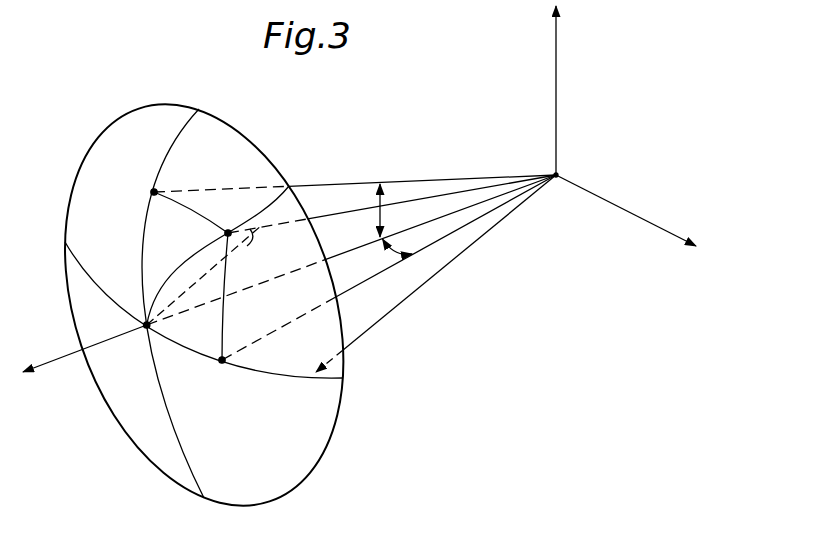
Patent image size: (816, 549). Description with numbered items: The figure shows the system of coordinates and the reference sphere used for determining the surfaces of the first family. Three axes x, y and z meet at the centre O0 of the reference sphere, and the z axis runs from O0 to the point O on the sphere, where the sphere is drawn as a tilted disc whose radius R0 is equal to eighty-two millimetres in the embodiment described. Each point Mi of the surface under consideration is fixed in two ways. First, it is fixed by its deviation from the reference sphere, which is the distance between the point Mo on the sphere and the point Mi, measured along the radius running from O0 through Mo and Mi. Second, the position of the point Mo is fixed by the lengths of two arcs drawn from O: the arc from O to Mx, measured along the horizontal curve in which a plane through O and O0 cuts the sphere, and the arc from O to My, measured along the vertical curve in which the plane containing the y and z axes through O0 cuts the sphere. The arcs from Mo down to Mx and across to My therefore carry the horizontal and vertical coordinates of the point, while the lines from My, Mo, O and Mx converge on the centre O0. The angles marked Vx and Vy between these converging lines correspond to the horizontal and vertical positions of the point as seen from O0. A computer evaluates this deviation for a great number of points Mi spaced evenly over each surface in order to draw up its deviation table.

The centre of the reference sphere O0 is at (429, 235).
The origin point on the reference sphere O is at (225, 308).
The point My on the vertical intersection curve My is at (204, 205).
The point M0 on the reference sphere Mo is at (264, 279).
The point Mx on the horizontal intersection curve Mx is at (273, 345).
The point of the surface S1 Mi is at (263, 226).
The vertical angle of view Vy is at (377, 218).
The horizontal angle of view Vx is at (389, 255).
The radius of the reference sphere R0 is at (421, 285).
The x axis x is at (634, 224).
The y axis y is at (565, 90).
The z axis z is at (85, 363).